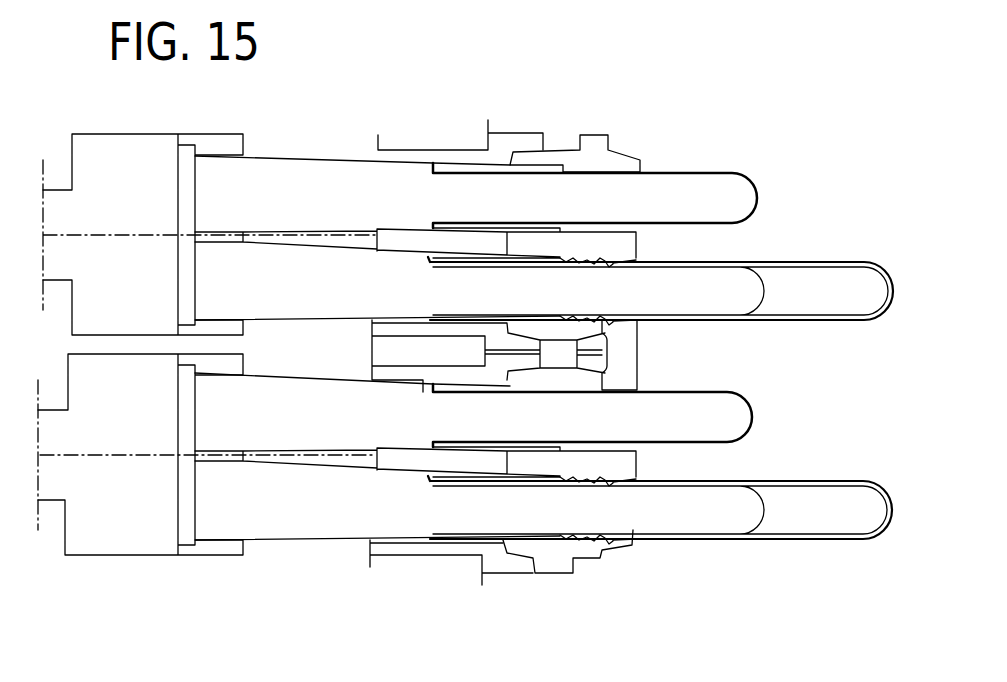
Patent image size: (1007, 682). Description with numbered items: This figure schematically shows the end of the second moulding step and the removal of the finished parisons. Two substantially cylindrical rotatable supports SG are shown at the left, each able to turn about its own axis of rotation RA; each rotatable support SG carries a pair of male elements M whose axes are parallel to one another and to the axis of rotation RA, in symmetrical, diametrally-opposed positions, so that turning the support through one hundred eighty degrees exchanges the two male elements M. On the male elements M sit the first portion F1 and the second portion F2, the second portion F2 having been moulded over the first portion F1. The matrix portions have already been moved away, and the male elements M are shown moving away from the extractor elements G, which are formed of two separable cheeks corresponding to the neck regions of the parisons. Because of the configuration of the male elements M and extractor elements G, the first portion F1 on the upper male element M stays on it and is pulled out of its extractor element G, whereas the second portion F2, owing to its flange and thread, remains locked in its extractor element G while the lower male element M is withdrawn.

The rotatable support SG is at (120, 134).
The axis of rotation RA is at (83, 237).
The male element M is at (336, 156).
The extractor element G is at (566, 150).
The first portion F1 is at (712, 173).
The second portion F2 is at (873, 320).